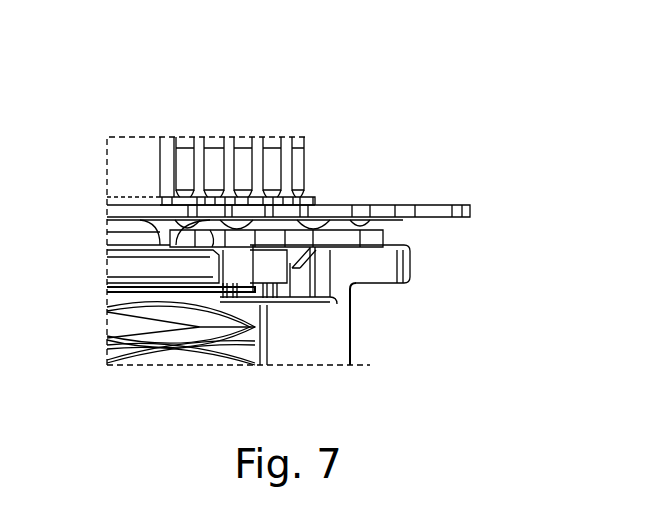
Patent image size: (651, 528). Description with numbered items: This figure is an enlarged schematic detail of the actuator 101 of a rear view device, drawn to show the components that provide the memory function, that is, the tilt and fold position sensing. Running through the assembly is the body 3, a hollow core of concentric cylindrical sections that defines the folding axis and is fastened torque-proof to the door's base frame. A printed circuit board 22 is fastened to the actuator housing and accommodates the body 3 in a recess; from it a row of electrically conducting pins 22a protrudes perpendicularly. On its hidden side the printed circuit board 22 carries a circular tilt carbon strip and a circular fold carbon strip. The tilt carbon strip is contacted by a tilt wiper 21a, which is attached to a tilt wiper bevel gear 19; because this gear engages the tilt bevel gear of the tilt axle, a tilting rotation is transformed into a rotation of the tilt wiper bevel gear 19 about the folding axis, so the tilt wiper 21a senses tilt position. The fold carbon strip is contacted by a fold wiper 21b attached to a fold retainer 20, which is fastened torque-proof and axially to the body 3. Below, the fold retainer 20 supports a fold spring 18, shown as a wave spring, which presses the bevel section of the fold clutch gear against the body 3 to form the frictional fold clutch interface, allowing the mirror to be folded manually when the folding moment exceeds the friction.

The body 3 is at (123, 137).
The actuator 101 is at (418, 113).
The electrically conducting pins 22a is at (269, 137).
The printed circuit board 22 is at (428, 205).
The tilt wiper 21a is at (384, 236).
The fold wiper 21b is at (182, 240).
The tilt wiper bevel gear 19 is at (413, 272).
The fold retainer 20 is at (343, 270).
The fold spring 18 is at (263, 310).